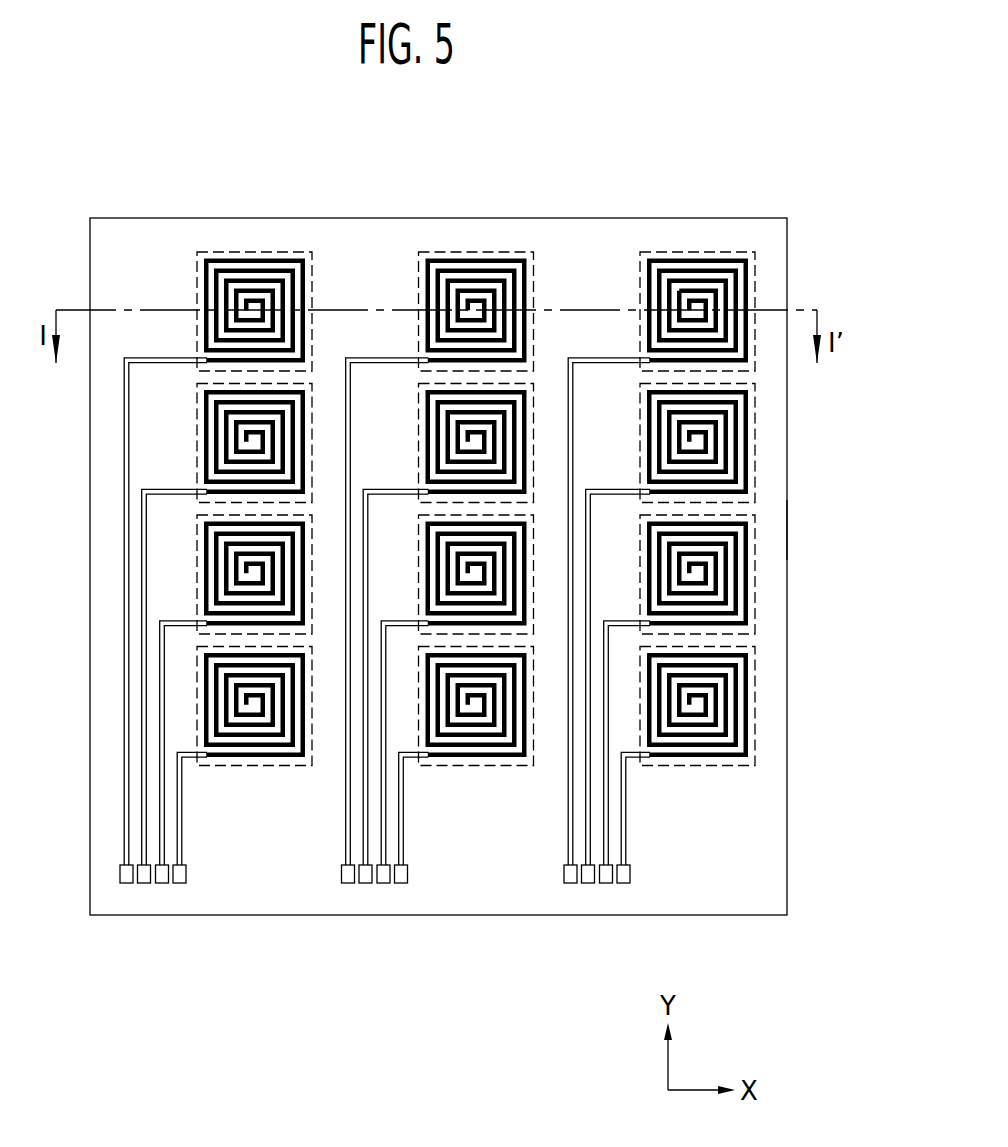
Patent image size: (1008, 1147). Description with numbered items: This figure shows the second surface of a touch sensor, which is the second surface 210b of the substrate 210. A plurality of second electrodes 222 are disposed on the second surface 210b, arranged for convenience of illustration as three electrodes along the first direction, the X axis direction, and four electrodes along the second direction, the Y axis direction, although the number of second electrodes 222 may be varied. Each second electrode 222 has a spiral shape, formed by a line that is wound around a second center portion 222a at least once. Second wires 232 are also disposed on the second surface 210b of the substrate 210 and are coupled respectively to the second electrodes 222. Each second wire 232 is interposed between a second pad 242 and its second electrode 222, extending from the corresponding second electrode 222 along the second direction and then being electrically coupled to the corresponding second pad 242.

The substrate 210 is at (787, 421).
The second surface 210b is at (777, 532).
The second electrodes 222 is at (750, 264).
The second center portion 222a is at (765, 284).
The second wires 232 is at (605, 357).
The second pads 242 is at (588, 883).